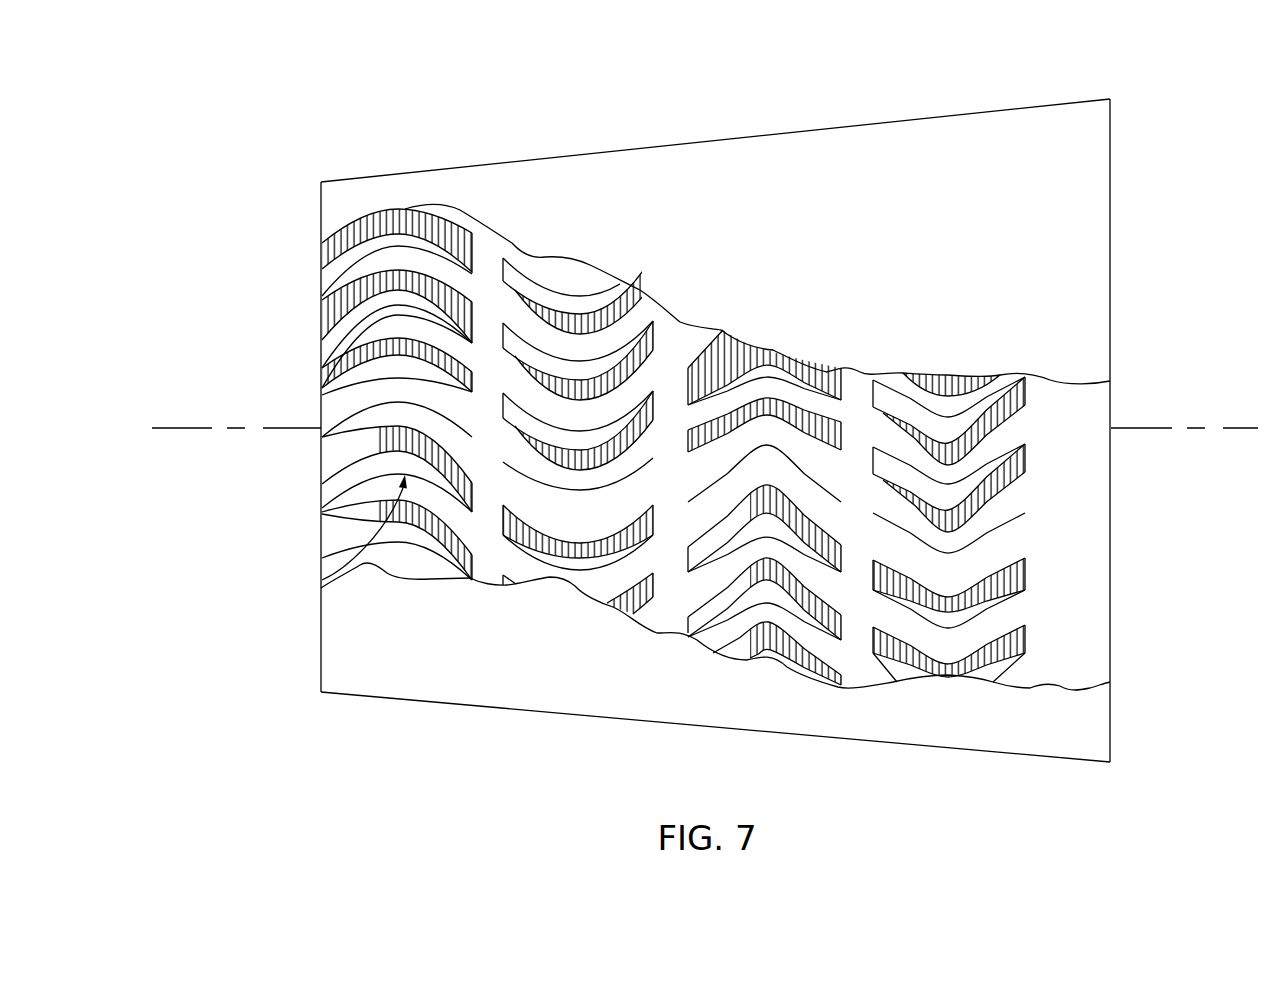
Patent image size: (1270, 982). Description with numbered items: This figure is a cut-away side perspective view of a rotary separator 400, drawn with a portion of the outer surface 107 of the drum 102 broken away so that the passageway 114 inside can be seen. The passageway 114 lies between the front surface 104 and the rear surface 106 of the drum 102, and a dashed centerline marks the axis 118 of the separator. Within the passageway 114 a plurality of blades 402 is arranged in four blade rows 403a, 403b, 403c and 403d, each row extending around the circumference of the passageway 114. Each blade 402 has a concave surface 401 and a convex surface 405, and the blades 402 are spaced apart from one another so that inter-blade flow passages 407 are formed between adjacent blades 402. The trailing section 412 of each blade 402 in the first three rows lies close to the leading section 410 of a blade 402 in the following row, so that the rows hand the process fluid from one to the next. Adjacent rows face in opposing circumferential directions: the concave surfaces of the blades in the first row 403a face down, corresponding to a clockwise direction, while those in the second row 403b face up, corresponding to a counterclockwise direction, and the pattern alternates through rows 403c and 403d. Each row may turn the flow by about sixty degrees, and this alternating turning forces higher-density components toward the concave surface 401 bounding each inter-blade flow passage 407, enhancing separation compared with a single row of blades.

The rotary separator 400 is at (232, 108).
The drum 102 is at (1111, 99).
The front surface 104 is at (321, 514).
The rear surface 106 is at (1111, 548).
The outer surface 107 is at (840, 155).
The passageway 114 is at (337, 313).
The axis 118 is at (165, 428).
The concave surface 401 is at (548, 493).
The blade 402 is at (610, 435).
The first blade row 403a is at (342, 393).
The second blade row 403b is at (598, 424).
The third blade row 403c is at (766, 631).
The fourth blade row 403d is at (946, 699).
The convex surface 405 is at (620, 500).
The inter-blade flow passage 407 is at (321, 559).
The leading section 410 is at (338, 348).
The trailing section 412 is at (444, 340).